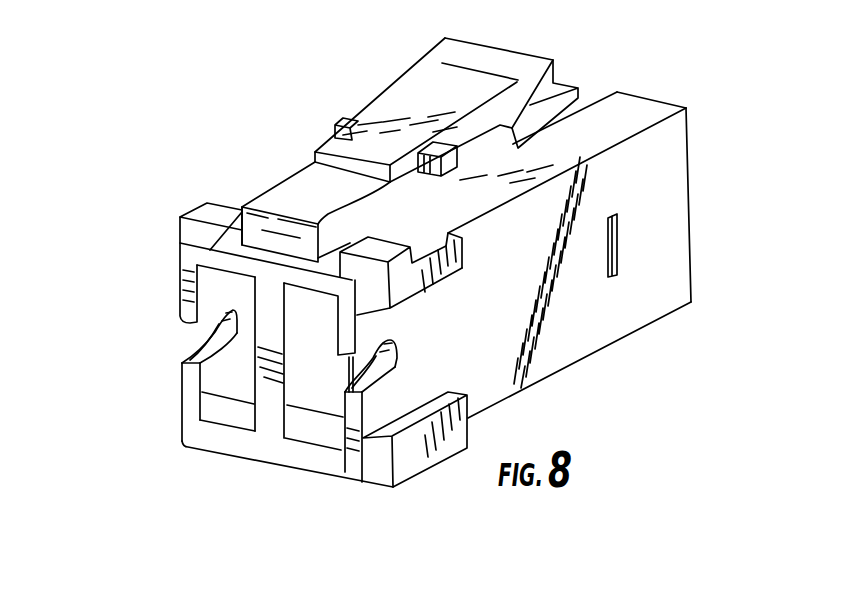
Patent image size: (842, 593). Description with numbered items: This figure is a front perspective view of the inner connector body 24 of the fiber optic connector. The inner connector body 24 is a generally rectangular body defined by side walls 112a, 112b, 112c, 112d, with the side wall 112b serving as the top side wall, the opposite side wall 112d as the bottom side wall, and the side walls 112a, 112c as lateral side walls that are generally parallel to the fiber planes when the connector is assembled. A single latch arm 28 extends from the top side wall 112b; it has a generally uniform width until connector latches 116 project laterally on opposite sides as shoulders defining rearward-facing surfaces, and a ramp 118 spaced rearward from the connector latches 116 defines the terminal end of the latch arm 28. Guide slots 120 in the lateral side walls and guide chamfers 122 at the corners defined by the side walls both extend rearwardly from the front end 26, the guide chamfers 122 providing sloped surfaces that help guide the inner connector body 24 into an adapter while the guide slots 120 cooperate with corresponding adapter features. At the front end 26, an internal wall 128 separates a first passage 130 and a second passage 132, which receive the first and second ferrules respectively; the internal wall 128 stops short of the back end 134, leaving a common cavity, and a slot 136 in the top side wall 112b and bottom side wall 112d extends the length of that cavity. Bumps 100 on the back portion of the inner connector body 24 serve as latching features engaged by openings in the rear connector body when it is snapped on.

The inner connector body 24 is at (596, 353).
The front end 26 is at (232, 252).
The latch arm 28 is at (393, 97).
The bumps 100 is at (620, 268).
The side wall 112a is at (182, 288).
The side wall 112b is at (630, 102).
The side wall 112c is at (677, 163).
The side wall 112d is at (310, 457).
The connector latches 116 is at (345, 117).
The ramp 118 is at (482, 58).
The guide slots 120 is at (193, 357).
The guide chamfers 122 is at (193, 203).
The internal wall 128 is at (257, 378).
The first passage 130 is at (224, 378).
The second passage 132 is at (310, 397).
The back end 134 is at (693, 222).
The slot 136 is at (587, 100).